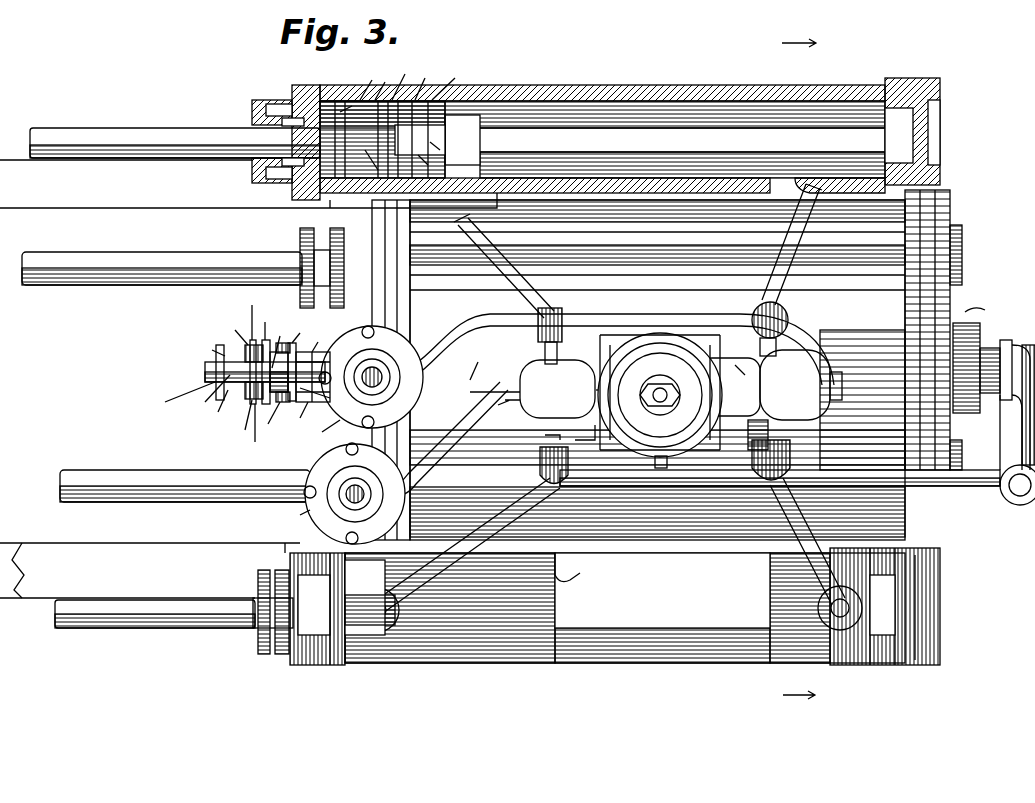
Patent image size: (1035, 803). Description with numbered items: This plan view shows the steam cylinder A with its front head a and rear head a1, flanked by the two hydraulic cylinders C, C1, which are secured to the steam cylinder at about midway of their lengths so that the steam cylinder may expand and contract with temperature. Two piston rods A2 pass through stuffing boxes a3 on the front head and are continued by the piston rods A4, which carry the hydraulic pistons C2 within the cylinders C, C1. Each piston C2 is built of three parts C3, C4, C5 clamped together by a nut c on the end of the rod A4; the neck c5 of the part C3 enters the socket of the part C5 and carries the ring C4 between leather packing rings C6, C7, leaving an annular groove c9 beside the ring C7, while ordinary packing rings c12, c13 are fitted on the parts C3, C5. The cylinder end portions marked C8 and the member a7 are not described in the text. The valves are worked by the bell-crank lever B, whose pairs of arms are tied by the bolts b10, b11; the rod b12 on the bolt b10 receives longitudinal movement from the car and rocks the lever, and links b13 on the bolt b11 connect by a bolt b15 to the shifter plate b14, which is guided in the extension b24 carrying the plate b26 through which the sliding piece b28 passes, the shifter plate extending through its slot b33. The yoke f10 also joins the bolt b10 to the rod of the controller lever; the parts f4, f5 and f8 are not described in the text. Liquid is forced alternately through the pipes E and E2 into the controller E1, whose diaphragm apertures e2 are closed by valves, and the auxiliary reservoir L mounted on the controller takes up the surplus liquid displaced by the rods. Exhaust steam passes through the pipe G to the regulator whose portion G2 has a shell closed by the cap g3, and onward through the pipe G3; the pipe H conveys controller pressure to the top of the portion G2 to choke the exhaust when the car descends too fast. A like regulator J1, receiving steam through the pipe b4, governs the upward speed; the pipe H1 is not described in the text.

The hydraulic cylinder C1 is at (630, 135).
The hydraulic cylinder C is at (642, 606).
The hydraulic piston C2 is at (382, 139).
The piston part C3 is at (369, 80).
The piston ring part C4 is at (402, 78).
The piston part C5 is at (449, 80).
The packing ring C6 is at (425, 80).
The packing ring C7 is at (385, 81).
The cylinder end cap C8 is at (298, 367).
The nut c is at (462, 139).
The neck or hub-like portion c5 is at (416, 151).
The annular groove or recess c9 is at (365, 149).
The packing ring c12 is at (431, 138).
The packing ring c13 is at (349, 119).
The steam cylinder A is at (686, 365).
The front head a is at (391, 370).
The rear head a1 is at (994, 383).
The stuffing box a3 is at (309, 441).
The plate a7 is at (248, 379).
The piston rod A2 is at (166, 366).
The piston rod A4 is at (175, 374).
The bell-crank lever B is at (305, 361).
The pipe b4 is at (484, 363).
The bolt b10 is at (274, 389).
The bolt b11 is at (267, 354).
The rod b12 is at (303, 359).
The link b13 is at (241, 377).
The shifter plate b14 is at (214, 409).
The bolt b15 is at (254, 371).
The extension b24 is at (207, 365).
The plate b26 is at (205, 397).
The sliding piece b28 is at (250, 374).
The slot b33 is at (177, 398).
The fitting f4 is at (736, 361).
The fitting f5 is at (585, 438).
The lever f8 is at (495, 387).
The yoke f10 is at (310, 381).
The pipe E is at (807, 407).
The controller E1 is at (795, 400).
The pipe E2 is at (461, 423).
The aperture e2 is at (640, 388).
The exhaust pipe G is at (326, 432).
The regulator portion G2 is at (354, 493).
The exhaust pipe G3 is at (797, 485).
The cap g3 is at (292, 514).
The pipe H is at (439, 443).
The pipe H' H1 is at (612, 343).
The regulator J1 is at (371, 377).
The auxiliary reservoir L is at (660, 395).